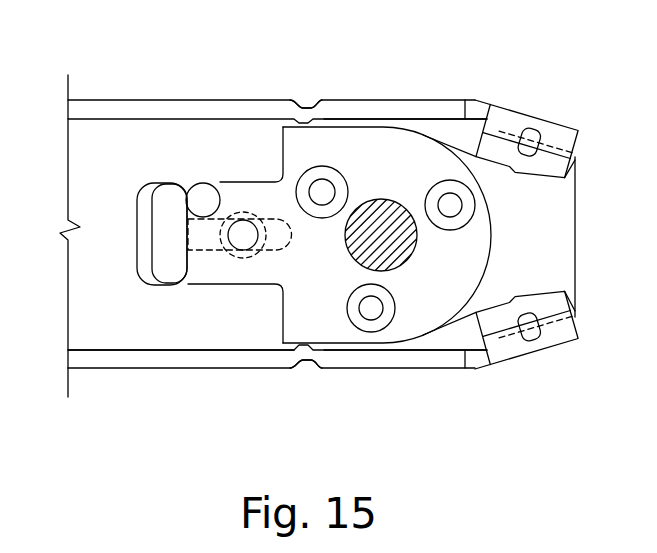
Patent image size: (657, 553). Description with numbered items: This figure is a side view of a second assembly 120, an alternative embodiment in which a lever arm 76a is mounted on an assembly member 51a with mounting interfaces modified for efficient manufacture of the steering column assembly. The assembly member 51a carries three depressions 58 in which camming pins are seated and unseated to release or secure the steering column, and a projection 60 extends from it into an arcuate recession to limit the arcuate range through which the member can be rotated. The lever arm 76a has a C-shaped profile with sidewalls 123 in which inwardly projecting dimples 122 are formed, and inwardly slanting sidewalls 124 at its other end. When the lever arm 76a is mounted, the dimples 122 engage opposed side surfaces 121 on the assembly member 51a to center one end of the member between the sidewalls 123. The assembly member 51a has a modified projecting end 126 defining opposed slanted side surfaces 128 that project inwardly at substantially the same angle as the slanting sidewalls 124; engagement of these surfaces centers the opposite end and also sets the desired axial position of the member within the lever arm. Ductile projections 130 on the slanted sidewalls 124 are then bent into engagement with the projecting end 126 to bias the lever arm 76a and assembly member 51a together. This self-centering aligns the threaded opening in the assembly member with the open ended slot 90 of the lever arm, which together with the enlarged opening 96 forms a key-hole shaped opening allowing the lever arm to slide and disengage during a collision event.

The second assembly 120 is at (165, 90).
The opposed side surfaces 121 is at (337, 126).
The inwardly projecting dimples 122 is at (305, 109).
The sidewalls 123 is at (395, 107).
The inwardly slanting sidewalls 124 is at (540, 119).
The projecting end 126 is at (565, 263).
The slanted side surfaces 128 is at (507, 133).
The ductile projections 130 is at (573, 163).
The assembly member 51a is at (358, 147).
The depressions 58 is at (307, 173).
The projection 60 is at (199, 193).
The lever arm 76a is at (135, 337).
The open ended slot 90 is at (272, 243).
The enlarged opening 96 is at (157, 226).